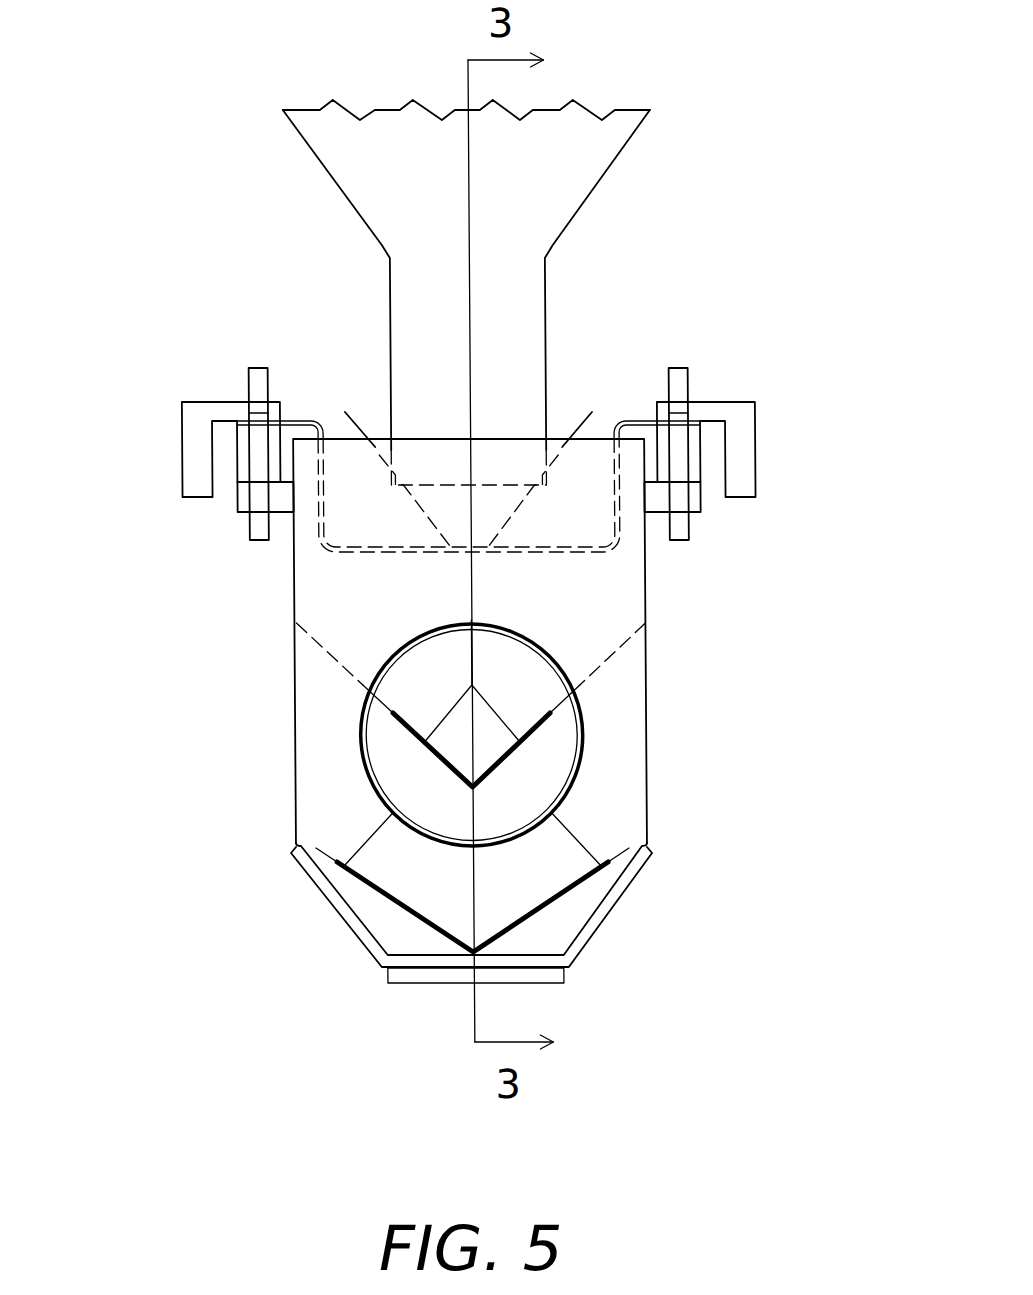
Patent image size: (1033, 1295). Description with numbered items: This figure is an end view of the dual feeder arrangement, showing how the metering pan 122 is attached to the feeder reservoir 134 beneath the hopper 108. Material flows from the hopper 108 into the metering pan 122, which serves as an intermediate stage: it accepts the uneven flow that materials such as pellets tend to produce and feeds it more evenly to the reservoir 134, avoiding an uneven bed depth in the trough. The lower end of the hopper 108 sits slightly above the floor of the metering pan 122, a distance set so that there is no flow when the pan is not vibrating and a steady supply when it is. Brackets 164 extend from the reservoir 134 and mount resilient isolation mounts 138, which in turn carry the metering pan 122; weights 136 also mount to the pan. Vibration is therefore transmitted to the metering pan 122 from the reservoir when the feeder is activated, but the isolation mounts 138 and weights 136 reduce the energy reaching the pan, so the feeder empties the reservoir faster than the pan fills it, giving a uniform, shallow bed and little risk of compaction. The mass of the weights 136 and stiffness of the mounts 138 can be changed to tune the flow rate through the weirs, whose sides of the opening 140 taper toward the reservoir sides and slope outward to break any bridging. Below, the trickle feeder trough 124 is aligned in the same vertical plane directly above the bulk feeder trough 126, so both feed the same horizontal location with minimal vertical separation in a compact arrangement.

The hopper 108 is at (529, 252).
The sides of the opening 140 is at (452, 341).
The metering pan 122 is at (461, 373).
The weights 136 is at (452, 411).
The resilient isolation mounts 138 is at (446, 397).
The brackets 164 is at (460, 556).
The reservoir 134 is at (555, 711).
The trickle feeder trough 124 is at (550, 743).
The bulk feeder trough 126 is at (541, 933).